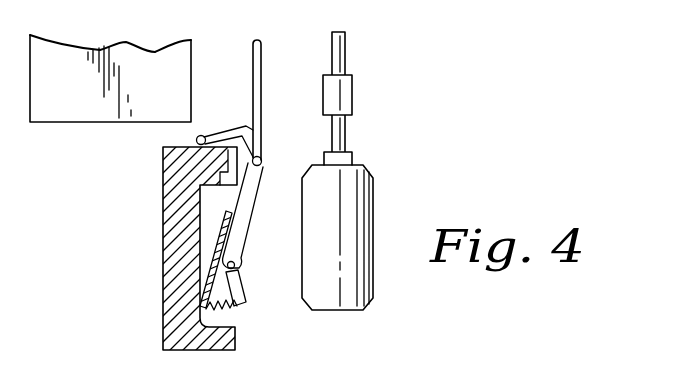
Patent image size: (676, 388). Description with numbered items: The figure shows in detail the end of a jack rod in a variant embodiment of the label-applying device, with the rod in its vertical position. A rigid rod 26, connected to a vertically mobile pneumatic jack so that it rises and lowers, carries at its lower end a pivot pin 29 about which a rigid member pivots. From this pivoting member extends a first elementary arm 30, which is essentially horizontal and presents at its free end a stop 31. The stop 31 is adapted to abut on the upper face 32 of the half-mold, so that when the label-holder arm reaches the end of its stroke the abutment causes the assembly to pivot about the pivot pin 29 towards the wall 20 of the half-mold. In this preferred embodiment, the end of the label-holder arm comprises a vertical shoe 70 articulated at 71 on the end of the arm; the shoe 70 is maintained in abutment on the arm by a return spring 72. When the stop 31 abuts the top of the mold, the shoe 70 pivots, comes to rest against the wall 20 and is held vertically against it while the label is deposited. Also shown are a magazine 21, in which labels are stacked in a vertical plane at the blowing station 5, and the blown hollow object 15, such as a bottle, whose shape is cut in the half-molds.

The blowing station 5 is at (340, 50).
The blown hollow object 15 is at (366, 183).
The wall of the half-mold 20 is at (202, 254).
The magazine 21 is at (53, 106).
The rigid rod 26 is at (252, 52).
The pivot pin 29 is at (262, 161).
The first elementary arm 30 is at (230, 132).
The stop 31 is at (201, 135).
The upper face of the half-mold 32 is at (180, 146).
The vertical shoe 70 is at (224, 216).
The articulation 71 is at (243, 263).
The return spring 72 is at (233, 312).